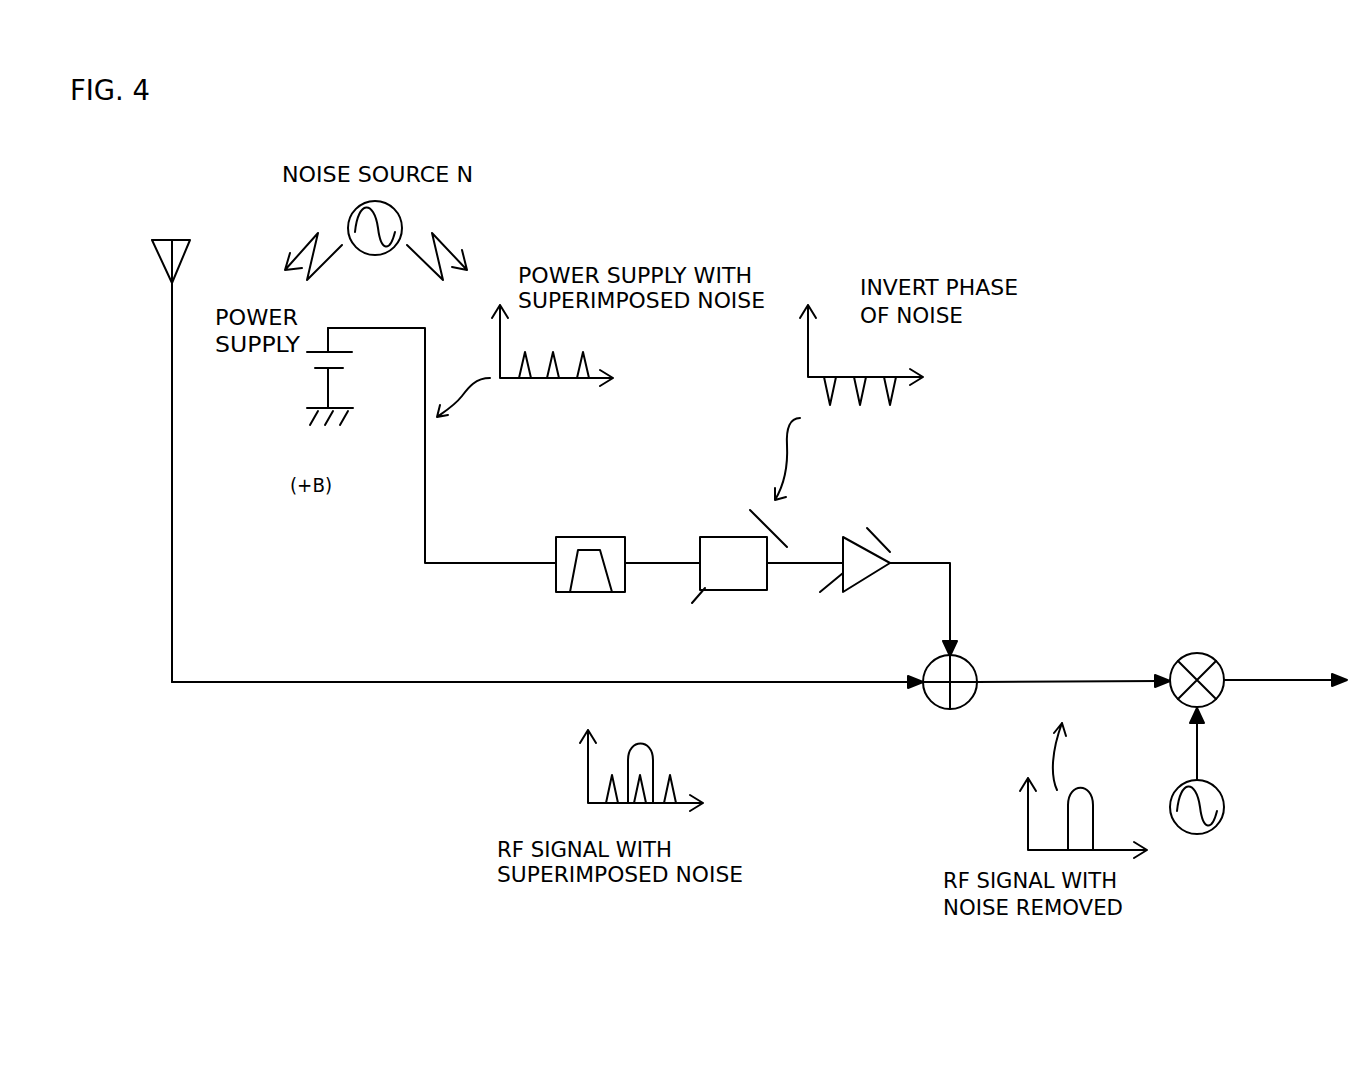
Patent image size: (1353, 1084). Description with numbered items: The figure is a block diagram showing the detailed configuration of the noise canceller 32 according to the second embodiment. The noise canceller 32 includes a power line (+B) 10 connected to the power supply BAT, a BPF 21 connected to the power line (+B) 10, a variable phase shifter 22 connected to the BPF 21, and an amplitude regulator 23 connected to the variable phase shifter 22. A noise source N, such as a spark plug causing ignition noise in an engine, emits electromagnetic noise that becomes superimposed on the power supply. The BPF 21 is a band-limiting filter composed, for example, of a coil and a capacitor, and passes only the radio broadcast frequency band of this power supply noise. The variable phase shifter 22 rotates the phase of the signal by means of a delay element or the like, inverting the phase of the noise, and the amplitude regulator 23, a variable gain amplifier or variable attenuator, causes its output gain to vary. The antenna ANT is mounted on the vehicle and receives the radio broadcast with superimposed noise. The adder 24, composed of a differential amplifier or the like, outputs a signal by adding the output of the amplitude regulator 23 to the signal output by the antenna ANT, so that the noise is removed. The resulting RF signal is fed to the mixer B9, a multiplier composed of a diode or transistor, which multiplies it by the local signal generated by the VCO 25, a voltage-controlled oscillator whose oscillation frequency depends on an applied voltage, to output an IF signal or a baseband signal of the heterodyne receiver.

The power line (+B) 10 is at (472, 568).
The BPF 21 is at (556, 540).
The variable phase shifter 22 is at (700, 540).
The amplitude regulator 23 is at (842, 535).
The adder 24 is at (950, 709).
The VCO 25 is at (1193, 834).
The mixer B9 is at (1190, 655).
The noise canceller 32 is at (327, 850).
The antenna ANT is at (170, 267).
The power supply BAT is at (317, 368).